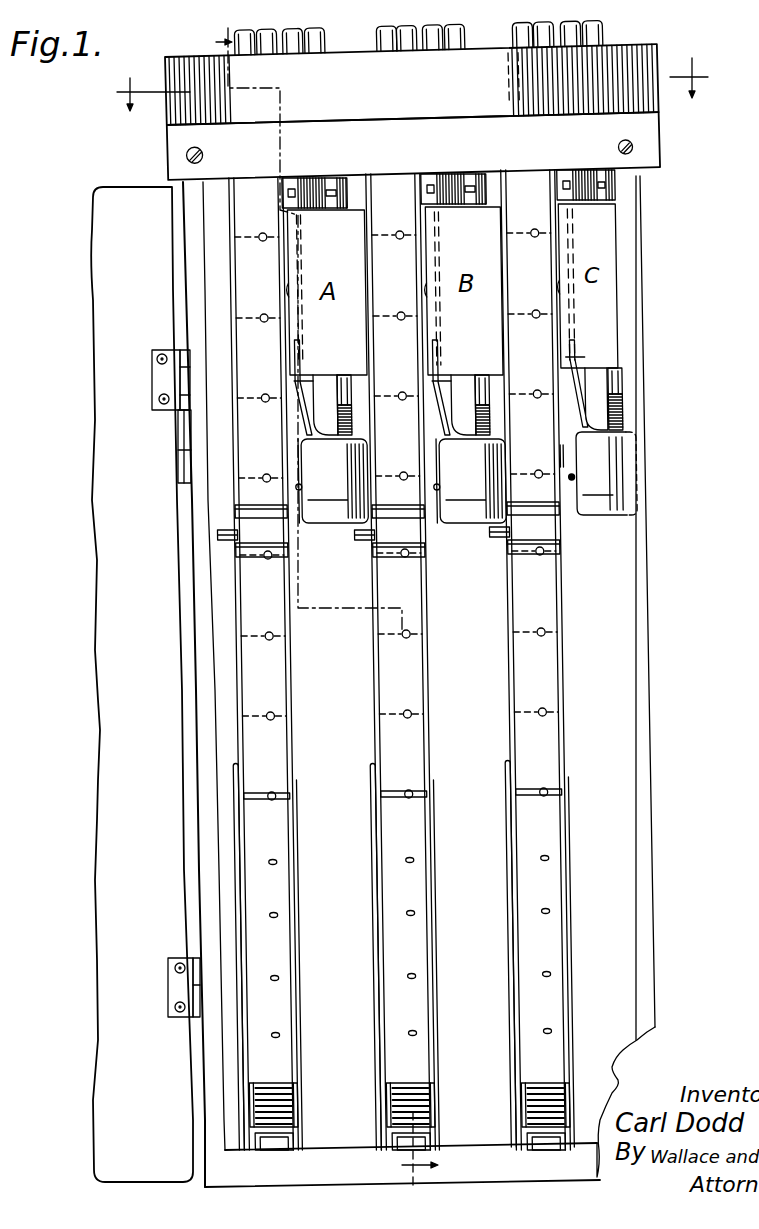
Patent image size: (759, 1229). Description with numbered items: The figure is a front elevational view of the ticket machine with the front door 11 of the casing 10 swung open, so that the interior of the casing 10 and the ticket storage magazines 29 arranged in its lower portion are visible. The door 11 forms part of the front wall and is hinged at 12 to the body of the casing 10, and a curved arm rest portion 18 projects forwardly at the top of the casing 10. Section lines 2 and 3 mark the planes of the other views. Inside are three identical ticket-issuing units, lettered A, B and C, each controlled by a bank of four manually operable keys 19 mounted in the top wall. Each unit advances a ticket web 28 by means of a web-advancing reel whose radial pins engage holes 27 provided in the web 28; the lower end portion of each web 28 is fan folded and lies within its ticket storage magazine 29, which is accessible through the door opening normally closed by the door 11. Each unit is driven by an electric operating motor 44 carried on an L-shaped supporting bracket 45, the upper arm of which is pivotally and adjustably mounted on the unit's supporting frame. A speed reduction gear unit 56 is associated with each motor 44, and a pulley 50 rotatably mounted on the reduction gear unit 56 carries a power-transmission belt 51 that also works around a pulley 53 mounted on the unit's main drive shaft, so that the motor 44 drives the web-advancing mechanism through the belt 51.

The section line 2- 2 is at (410, 84).
The section line 3- 3 is at (317, 608).
The casing 10 is at (643, 298).
The door 11 is at (118, 693).
The hinge 12 is at (162, 385).
The curved arm rest portion 18 is at (644, 62).
The manually operable keys 19 is at (326, 46).
The holes 27 is at (267, 716).
The ticket web 28 is at (277, 743).
The ticket storage magazine 29 is at (299, 926).
The electric operating motor 44 is at (660, 480).
The L-shaped supporting bracket 45 is at (302, 465).
The pulley 50 is at (352, 418).
The belt 51 is at (345, 378).
The pulley 53 is at (345, 183).
The speed reduction gear unit 56 is at (322, 385).